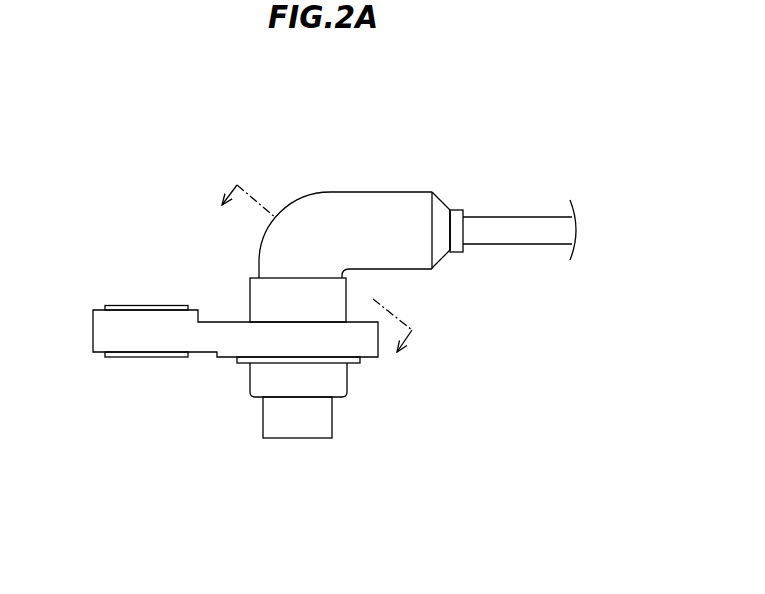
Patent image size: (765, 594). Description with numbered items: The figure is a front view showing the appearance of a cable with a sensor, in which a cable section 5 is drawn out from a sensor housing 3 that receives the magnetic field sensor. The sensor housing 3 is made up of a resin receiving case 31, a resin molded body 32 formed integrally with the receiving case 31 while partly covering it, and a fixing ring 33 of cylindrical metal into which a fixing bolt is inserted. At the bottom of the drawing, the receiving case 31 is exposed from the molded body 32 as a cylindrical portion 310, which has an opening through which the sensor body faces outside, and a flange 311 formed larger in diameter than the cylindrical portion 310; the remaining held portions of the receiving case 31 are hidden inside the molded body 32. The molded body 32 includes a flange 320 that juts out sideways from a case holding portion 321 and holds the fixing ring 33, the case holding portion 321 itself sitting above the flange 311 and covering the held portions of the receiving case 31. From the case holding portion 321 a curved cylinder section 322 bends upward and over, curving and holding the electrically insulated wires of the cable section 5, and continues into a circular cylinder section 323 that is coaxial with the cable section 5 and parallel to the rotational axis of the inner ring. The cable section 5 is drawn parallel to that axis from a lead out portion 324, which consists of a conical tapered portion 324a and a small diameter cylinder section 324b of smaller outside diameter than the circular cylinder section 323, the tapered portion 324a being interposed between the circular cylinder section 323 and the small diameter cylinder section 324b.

The sensor housing 3 is at (167, 238).
The cable section 5 is at (533, 233).
The receiving case 31 is at (352, 408).
The molded body 32 is at (275, 180).
The fixing ring 33 is at (137, 305).
The cylindrical portion 310 is at (272, 418).
The flange 311 is at (245, 361).
The flange 320 is at (232, 343).
The case holding portion 321 is at (257, 295).
The curved cylinder section 322 is at (307, 228).
The circular cylinder section 323 is at (417, 203).
The lead out portion 324 is at (445, 203).
The tapered portion 324a is at (437, 253).
The small diameter cylinder section 324b is at (458, 251).